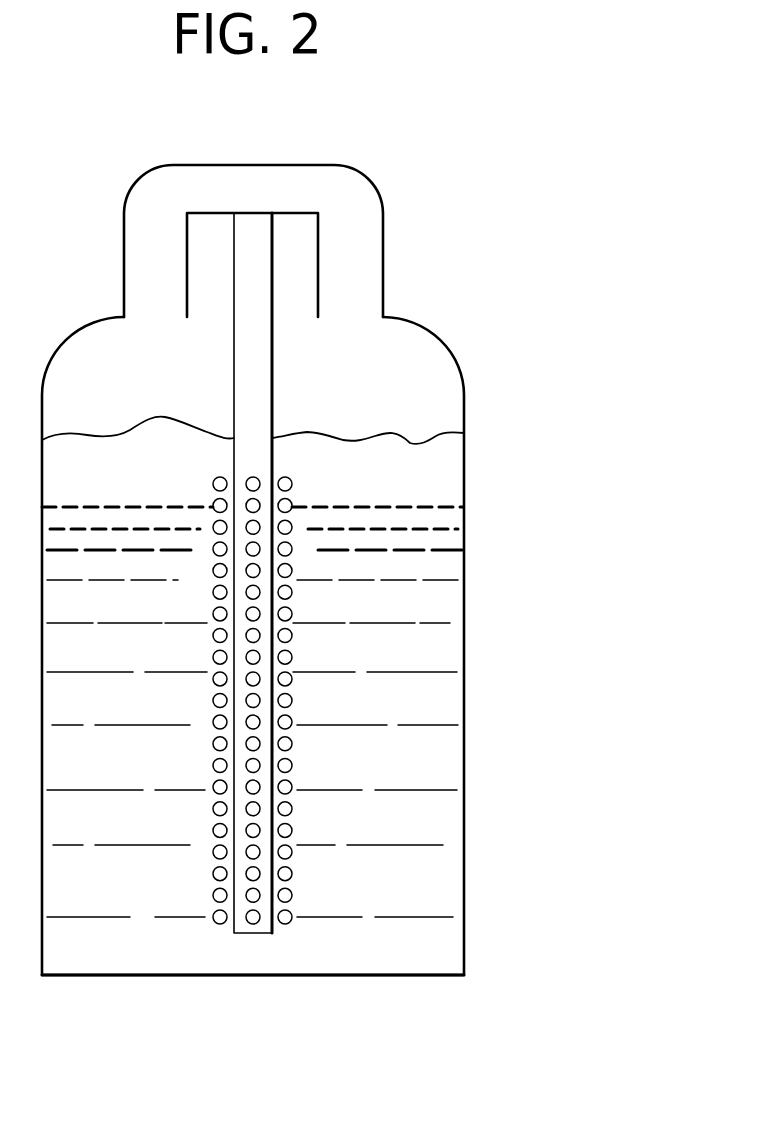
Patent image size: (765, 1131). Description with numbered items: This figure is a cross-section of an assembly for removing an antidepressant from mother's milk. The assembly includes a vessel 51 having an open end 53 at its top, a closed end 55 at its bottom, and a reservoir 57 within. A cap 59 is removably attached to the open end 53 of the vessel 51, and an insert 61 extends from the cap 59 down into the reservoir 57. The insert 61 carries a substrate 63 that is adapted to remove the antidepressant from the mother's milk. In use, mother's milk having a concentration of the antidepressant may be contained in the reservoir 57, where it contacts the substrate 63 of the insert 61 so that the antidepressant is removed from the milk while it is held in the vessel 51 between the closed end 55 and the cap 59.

The vessel 51 is at (482, 660).
The open end 53 is at (294, 217).
The closed end 55 is at (380, 975).
The reservoir 57 is at (437, 403).
The cap 59 is at (322, 165).
The insert 61 is at (272, 370).
The substrate 63 is at (292, 482).